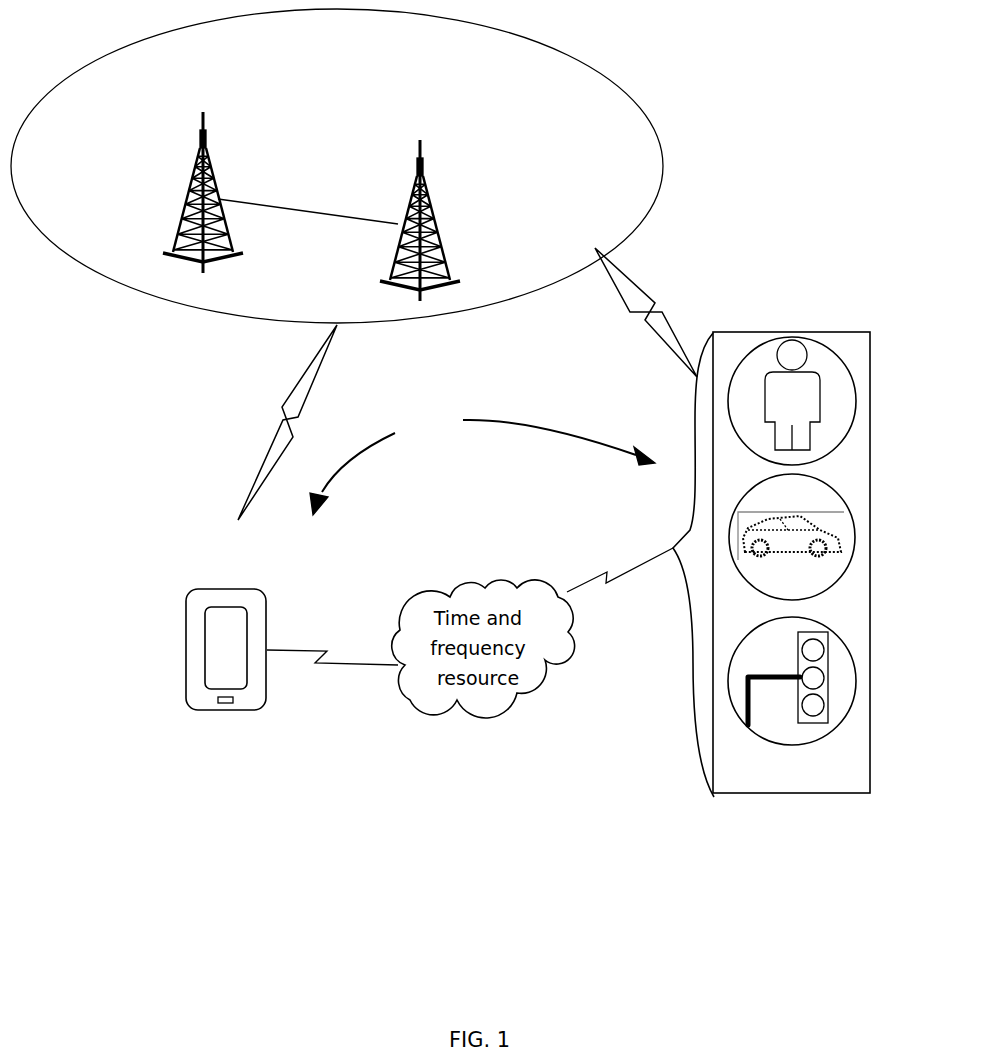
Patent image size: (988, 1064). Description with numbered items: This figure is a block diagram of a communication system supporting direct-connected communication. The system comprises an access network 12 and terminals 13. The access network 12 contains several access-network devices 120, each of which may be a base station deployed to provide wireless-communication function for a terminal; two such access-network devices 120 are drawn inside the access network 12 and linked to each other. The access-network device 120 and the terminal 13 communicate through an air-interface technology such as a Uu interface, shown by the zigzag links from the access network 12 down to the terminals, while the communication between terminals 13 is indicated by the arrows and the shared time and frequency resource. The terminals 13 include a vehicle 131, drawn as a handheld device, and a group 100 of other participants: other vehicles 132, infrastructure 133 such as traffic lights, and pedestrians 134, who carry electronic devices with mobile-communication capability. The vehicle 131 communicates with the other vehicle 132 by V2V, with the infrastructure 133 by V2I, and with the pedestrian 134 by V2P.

The access network 12 is at (489, 65).
The access-network device 120 is at (211, 176).
The terminal 13 is at (482, 467).
The vehicle 131 is at (225, 590).
The traffic participant panel / system 100 is at (809, 780).
The pedestrian 134 is at (857, 400).
The other vehicle 132 is at (857, 540).
The infrastructure 133 is at (857, 680).